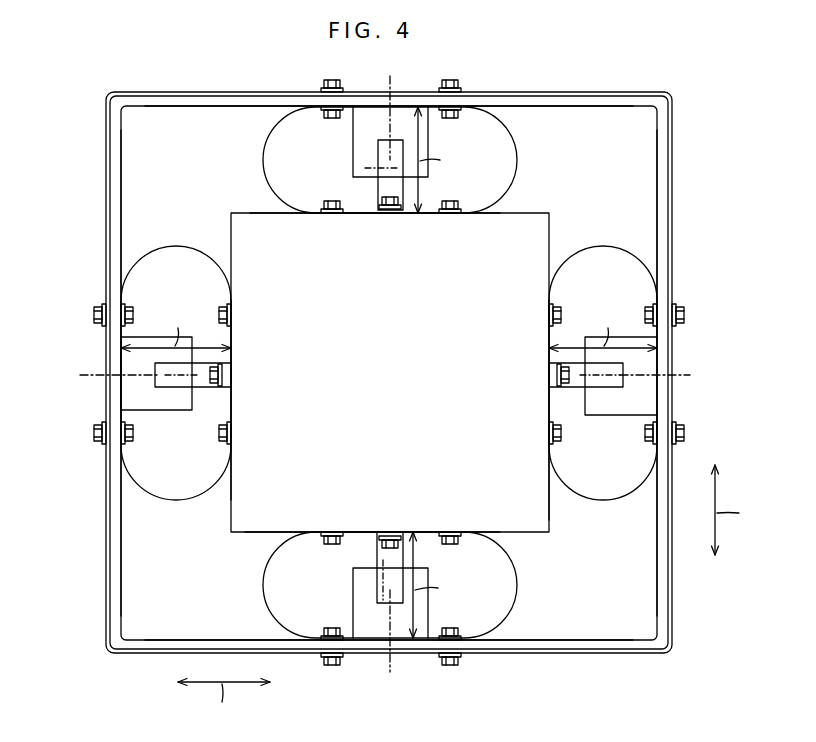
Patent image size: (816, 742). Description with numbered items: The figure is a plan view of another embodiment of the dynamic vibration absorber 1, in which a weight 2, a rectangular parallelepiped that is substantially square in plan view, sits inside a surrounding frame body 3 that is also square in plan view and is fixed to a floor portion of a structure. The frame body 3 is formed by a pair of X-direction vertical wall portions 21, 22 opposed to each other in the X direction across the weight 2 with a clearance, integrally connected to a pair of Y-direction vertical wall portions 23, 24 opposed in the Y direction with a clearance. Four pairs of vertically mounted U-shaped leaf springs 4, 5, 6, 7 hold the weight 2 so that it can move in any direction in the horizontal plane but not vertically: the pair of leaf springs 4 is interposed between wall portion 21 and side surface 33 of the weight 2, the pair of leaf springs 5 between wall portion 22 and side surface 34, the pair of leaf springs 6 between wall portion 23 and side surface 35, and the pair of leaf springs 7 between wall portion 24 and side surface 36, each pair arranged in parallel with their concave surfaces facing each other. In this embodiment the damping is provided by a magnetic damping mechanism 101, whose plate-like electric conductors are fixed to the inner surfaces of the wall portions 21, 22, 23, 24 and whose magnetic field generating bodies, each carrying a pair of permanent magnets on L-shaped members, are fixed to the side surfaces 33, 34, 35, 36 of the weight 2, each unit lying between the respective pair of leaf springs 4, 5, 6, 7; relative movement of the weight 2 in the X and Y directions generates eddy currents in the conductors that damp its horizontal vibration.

The dynamic vibration absorber 1 is at (99, 87).
The weight 2 is at (390, 377).
The frame body 3 is at (395, 377).
The leaf spring 4 is at (178, 246).
The leaf spring 5 is at (608, 246).
The leaf spring 6 is at (262, 152).
The leaf spring 7 is at (263, 589).
The X-direction vertical wall portion 21 is at (104, 547).
The X-direction vertical wall portion 22 is at (674, 255).
The Y-direction vertical wall portion 23 is at (575, 92).
The Y-direction vertical wall portion 24 is at (530, 654).
The side surface of the weight 33 is at (229, 500).
The side surface of the weight 34 is at (549, 518).
The side surface of the weight 35 is at (253, 212).
The side surface of the weight 36 is at (245, 533).
The magnetic damping mechanism 101 is at (143, 328).